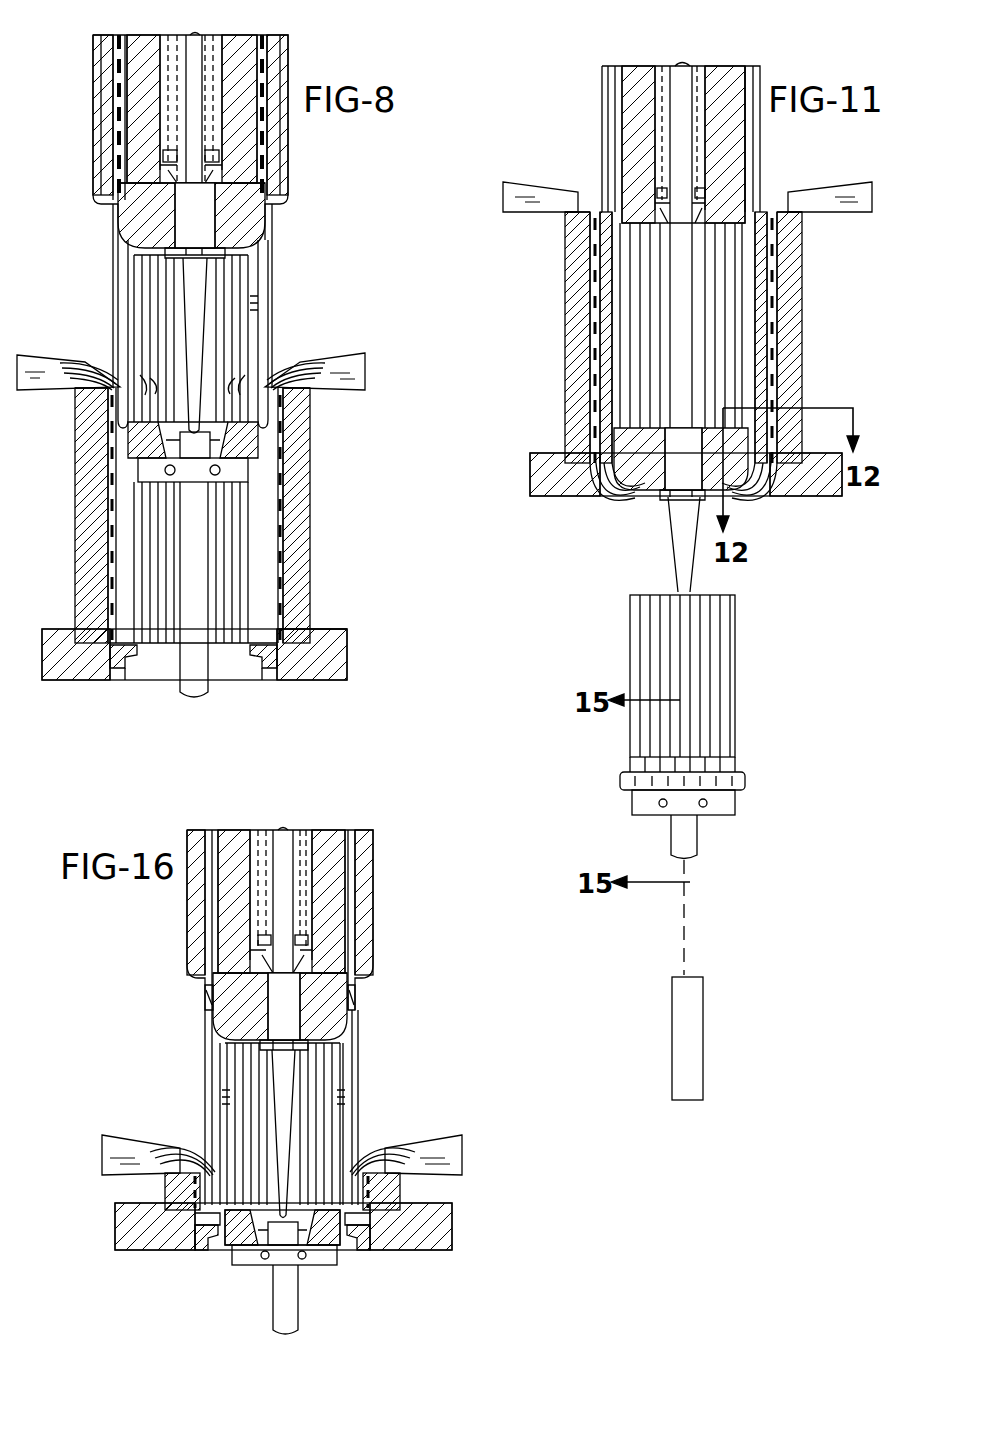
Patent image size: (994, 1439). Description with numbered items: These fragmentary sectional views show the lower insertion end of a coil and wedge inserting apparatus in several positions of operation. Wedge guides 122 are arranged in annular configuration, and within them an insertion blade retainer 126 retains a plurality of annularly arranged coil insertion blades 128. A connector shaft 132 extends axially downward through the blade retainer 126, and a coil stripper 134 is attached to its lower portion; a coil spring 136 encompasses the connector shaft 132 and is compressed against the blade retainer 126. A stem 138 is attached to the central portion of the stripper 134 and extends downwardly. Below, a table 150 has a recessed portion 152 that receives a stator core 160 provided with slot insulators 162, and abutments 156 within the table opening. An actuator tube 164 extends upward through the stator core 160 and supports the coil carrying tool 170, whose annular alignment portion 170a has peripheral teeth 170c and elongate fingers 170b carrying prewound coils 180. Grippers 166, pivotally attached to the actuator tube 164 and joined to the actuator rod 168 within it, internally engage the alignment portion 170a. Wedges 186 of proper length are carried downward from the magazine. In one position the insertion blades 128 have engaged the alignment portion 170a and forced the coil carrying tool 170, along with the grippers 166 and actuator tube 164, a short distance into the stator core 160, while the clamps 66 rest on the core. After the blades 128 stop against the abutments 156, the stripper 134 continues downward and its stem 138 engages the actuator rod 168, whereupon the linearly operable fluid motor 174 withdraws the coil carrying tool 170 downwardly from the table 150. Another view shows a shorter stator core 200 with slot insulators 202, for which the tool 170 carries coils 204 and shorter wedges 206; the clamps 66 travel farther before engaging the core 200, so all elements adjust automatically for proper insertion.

In FIG. 8, the clamp 66 is at (30, 358).
In FIG. 11, the clamp 66 is at (515, 182).
In FIG. 16, the clamp 66 is at (115, 1142).
In FIG. 8, the wedge guide 122 is at (108, 146).
In FIG. 11, the wedge guide 122 is at (605, 92).
In FIG. 16, the wedge guide 122 is at (197, 920).
In FIG. 8, the insertion blade retainer 126 is at (250, 68).
In FIG. 11, the insertion blade retainer 126 is at (730, 68).
In FIG. 16, the insertion blade retainer 126 is at (327, 830).
In FIG. 8, the coil insertion blade 128 is at (253, 272).
In FIG. 11, the coil insertion blade 128 is at (740, 300).
In FIG. 16, the coil insertion blade 128 is at (220, 1055).
In FIG. 8, the connector shaft 132 is at (200, 38).
In FIG. 11, the connector shaft 132 is at (683, 66).
In FIG. 16, the connector shaft 132 is at (275, 830).
In FIG. 8, the coil stripper 134 is at (103, 212).
In FIG. 11, the coil stripper 134 is at (630, 440).
In FIG. 16, the coil stripper 134 is at (348, 1019).
In FIG. 8, the coil spring 136 is at (215, 148).
In FIG. 11, the coil spring 136 is at (660, 195).
In FIG. 16, the coil spring 136 is at (305, 935).
In FIG. 8, the stem 138 is at (200, 313).
In FIG. 11, the stem 138 is at (675, 545).
In FIG. 16, the stem 138 is at (295, 1087).
In FIG. 8, the table 150 is at (343, 655).
In FIG. 11, the table 150 is at (530, 470).
In FIG. 16, the table 150 is at (452, 1230).
In FIG. 8, the recessed portion 152 is at (300, 629).
In FIG. 8, the abutment 156 is at (125, 683).
In FIG. 16, the abutment 156 is at (216, 1252).
In FIG. 8, the stator core 160 is at (78, 477).
In FIG. 11, the stator core 160 is at (565, 270).
In FIG. 8, the slot insulator 162 is at (112, 510).
In FIG. 11, the slot insulator 162 is at (590, 296).
In FIG. 8, the actuator tube 164 is at (185, 690).
In FIG. 11, the actuator tube 164 is at (675, 840).
In FIG. 16, the actuator tube 164 is at (278, 1315).
In FIG. 8, the gripper 166 is at (152, 452).
In FIG. 8, the actuator rod 168 is at (185, 443).
In FIG. 16, the actuator rod 168 is at (280, 1268).
In FIG. 8, the coil carrying tool 170 is at (140, 279).
In FIG. 11, the coil carrying tool 170 is at (630, 641).
In FIG. 16, the coil carrying tool 170 is at (328, 1062).
In FIG. 8, the annular alignment portion 170a is at (250, 440).
In FIG. 11, the annular alignment portion 170a is at (640, 780).
In FIG. 8, the elongate finger 170b is at (142, 314).
In FIG. 11, the elongate finger 170b is at (728, 640).
In FIG. 16, the elongate finger 170b is at (240, 1098).
In FIG. 11, the peripheral tooth 170c is at (740, 795).
In FIG. 11, the linearly operable fluid motor 174 is at (672, 1015).
In FIG. 8, the prewound coil 180 is at (88, 365).
In FIG. 11, the prewound coil 180 is at (605, 500).
In FIG. 8, the wedge 186 is at (118, 78).
In FIG. 11, the wedge 186 is at (755, 266).
In FIG. 16, the stator core 200 is at (178, 1250).
In FIG. 16, the slot insulator 202 is at (190, 1192).
In FIG. 16, the coil 204 is at (172, 1148).
In FIG. 16, the wedge 206 is at (208, 1005).